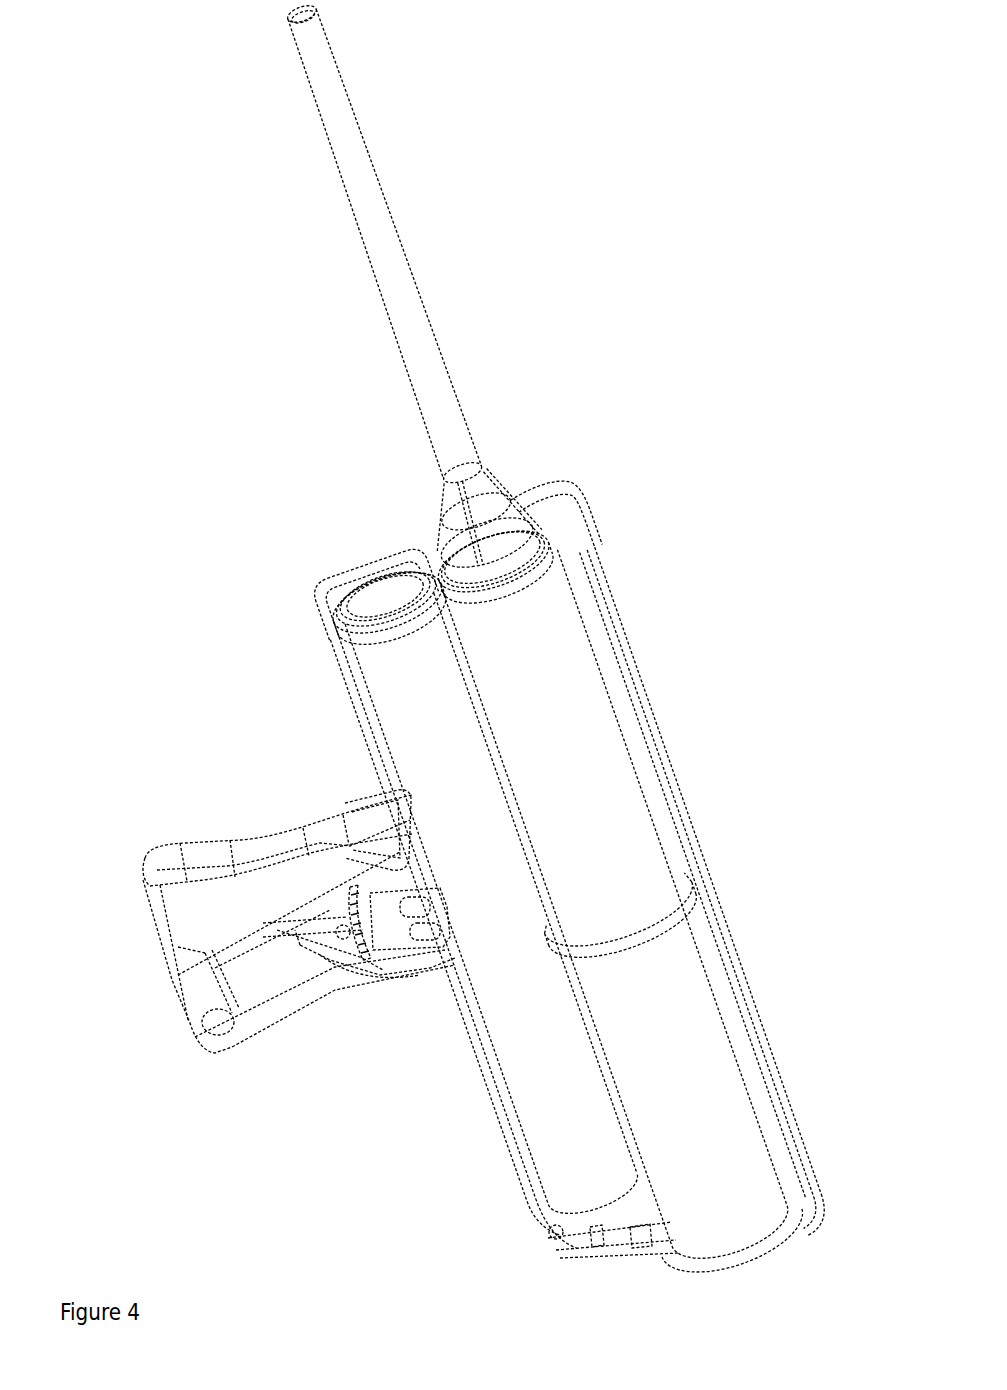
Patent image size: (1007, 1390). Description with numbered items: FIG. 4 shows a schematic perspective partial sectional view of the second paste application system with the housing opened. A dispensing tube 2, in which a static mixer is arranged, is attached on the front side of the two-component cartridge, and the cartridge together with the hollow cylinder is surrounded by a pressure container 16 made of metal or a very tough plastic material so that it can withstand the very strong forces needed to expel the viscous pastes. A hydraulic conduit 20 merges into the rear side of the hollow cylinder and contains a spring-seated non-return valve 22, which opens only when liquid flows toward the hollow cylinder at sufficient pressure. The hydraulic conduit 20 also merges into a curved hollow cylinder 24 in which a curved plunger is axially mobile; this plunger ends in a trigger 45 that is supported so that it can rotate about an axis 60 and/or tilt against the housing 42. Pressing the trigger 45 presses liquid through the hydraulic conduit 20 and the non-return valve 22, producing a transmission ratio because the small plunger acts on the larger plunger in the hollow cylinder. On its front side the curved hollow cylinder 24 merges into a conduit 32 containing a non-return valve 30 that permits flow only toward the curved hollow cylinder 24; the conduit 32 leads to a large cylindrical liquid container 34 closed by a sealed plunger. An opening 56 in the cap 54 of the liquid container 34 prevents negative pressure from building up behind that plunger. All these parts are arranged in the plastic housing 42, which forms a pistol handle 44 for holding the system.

The dispensing tube 2 is at (352, 150).
The pressure container 16 is at (530, 638).
The hydraulic conduit 20 is at (290, 913).
The non-return valve 22 is at (380, 907).
The curved hollow cylinder 24 is at (241, 952).
The non-return valve 30 is at (392, 933).
The conduit 32 is at (324, 943).
The liquid container 34 is at (398, 680).
The housing 42 is at (350, 580).
The pistol handle 44 is at (172, 978).
The trigger 45 is at (277, 847).
The cap 54 is at (408, 602).
The opening 56 is at (378, 589).
The axis 60 is at (393, 857).